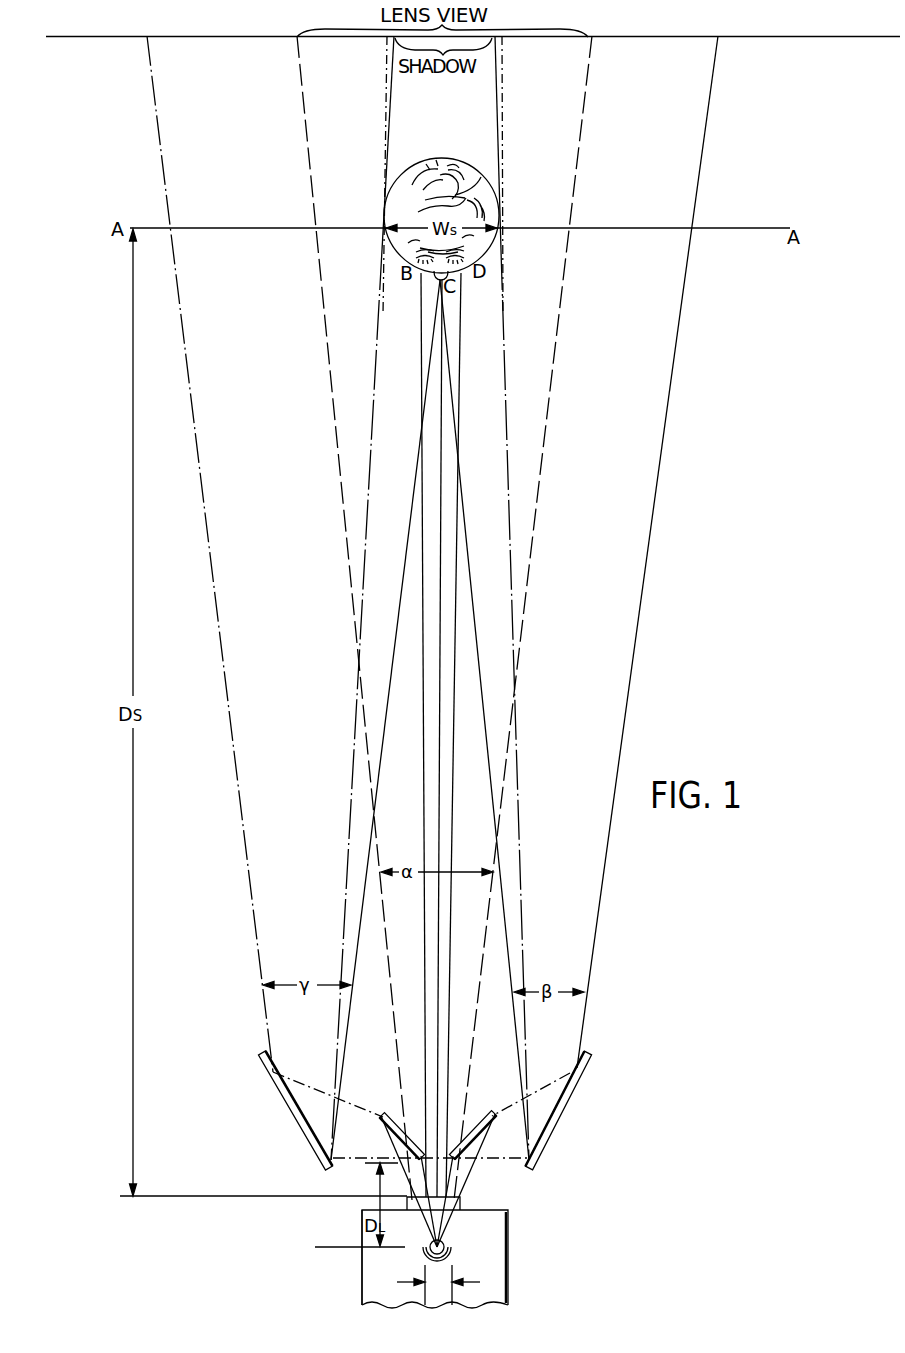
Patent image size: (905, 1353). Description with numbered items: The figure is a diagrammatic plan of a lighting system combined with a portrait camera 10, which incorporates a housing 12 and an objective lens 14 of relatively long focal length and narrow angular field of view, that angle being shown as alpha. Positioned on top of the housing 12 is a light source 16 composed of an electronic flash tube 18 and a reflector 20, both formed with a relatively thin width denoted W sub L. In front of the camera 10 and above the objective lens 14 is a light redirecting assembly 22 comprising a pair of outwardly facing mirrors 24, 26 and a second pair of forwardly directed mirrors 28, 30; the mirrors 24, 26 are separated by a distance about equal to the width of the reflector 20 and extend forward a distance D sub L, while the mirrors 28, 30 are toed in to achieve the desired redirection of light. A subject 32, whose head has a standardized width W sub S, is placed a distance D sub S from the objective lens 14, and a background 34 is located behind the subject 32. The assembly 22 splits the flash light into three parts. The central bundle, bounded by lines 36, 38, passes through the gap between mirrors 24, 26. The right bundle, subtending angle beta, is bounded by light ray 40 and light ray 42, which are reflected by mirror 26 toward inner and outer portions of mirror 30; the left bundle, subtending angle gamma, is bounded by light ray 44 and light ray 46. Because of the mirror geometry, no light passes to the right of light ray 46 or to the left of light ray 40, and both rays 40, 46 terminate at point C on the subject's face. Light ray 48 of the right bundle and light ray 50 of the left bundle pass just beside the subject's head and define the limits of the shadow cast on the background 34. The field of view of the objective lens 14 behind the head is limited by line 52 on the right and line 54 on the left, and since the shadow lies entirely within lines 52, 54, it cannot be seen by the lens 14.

The camera 10 is at (451, 1244).
The housing 12 is at (503, 1250).
The objective lens 14 is at (461, 1206).
The light source 16 is at (368, 1276).
The electronic flash tube 18 is at (444, 1247).
The reflector 20 is at (448, 1254).
The light redirecting assembly 22 is at (447, 1125).
The outwardly facing mirror 24 is at (393, 1115).
The outwardly facing mirror 26 is at (484, 1120).
The forwardly directed mirror 28 is at (271, 1078).
The forwardly directed mirror 30 is at (577, 1088).
The subject 32 is at (463, 157).
The background 34 is at (795, 39).
The line 36 is at (423, 669).
The line 38 is at (455, 694).
The light ray 40 is at (487, 770).
The light ray 42 is at (624, 705).
The light ray 44 is at (226, 678).
The light ray 46 is at (383, 754).
The light ray 48 is at (505, 368).
The light ray 50 is at (373, 368).
The line 52 is at (500, 98).
The line 54 is at (383, 97).